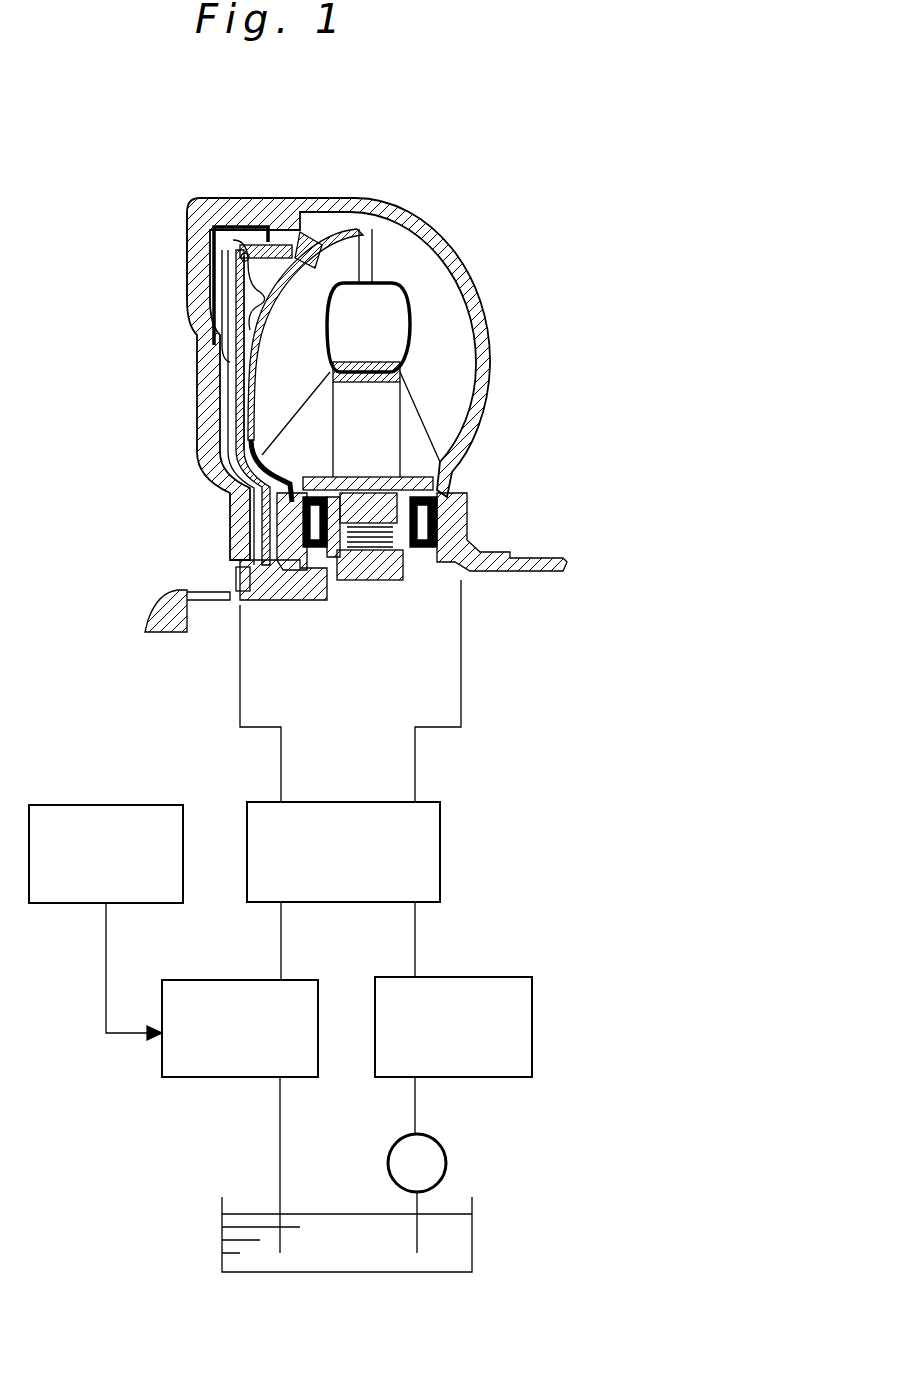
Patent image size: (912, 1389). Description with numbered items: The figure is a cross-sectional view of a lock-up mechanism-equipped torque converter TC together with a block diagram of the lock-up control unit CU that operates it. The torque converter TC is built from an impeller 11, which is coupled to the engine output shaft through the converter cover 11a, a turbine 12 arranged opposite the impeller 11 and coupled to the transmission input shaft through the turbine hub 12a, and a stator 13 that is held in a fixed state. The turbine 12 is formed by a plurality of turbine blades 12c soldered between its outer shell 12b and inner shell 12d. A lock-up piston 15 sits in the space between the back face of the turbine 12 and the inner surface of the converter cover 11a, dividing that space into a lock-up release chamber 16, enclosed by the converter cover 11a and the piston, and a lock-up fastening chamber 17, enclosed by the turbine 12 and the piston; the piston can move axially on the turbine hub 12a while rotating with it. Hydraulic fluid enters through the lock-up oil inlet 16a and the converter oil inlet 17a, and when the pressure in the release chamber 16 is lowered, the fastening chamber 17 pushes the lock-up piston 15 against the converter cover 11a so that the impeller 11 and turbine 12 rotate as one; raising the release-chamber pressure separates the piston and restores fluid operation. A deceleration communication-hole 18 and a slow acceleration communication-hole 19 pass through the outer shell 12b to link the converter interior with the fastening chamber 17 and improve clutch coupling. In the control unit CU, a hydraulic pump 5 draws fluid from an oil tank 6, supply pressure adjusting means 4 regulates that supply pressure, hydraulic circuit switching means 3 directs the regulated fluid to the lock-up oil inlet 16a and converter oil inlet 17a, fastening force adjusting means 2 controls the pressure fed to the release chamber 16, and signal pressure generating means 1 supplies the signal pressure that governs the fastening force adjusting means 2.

The torque converter TC is at (505, 252).
The lock-up control unit CU is at (570, 757).
The impeller 11 is at (453, 342).
The converter cover 11a is at (200, 372).
The turbine 12 is at (310, 342).
The turbine hub 12a is at (300, 575).
The outer shell 12b is at (337, 258).
The turbine blades 12c is at (380, 248).
The inner shell 12d is at (342, 305).
The stator 13 is at (383, 445).
The lock-up piston 15 is at (236, 457).
The lock-up release chamber 16 is at (222, 356).
The lock-up oil inlet 16a is at (195, 263).
The lock-up fastening chamber 17 is at (288, 232).
The converter oil inlet 17a is at (457, 572).
The deceleration communication-hole 18 is at (240, 415).
The slow acceleration communication-hole 19 is at (292, 242).
The signal pressure generating means 1 is at (67, 805).
The fastening force adjusting means 2 is at (202, 980).
The hydraulic circuit switching means 3 is at (440, 842).
The supply pressure adjusting means 4 is at (532, 1018).
The hydraulic pump 5 is at (446, 1155).
The oil tank 6 is at (472, 1228).